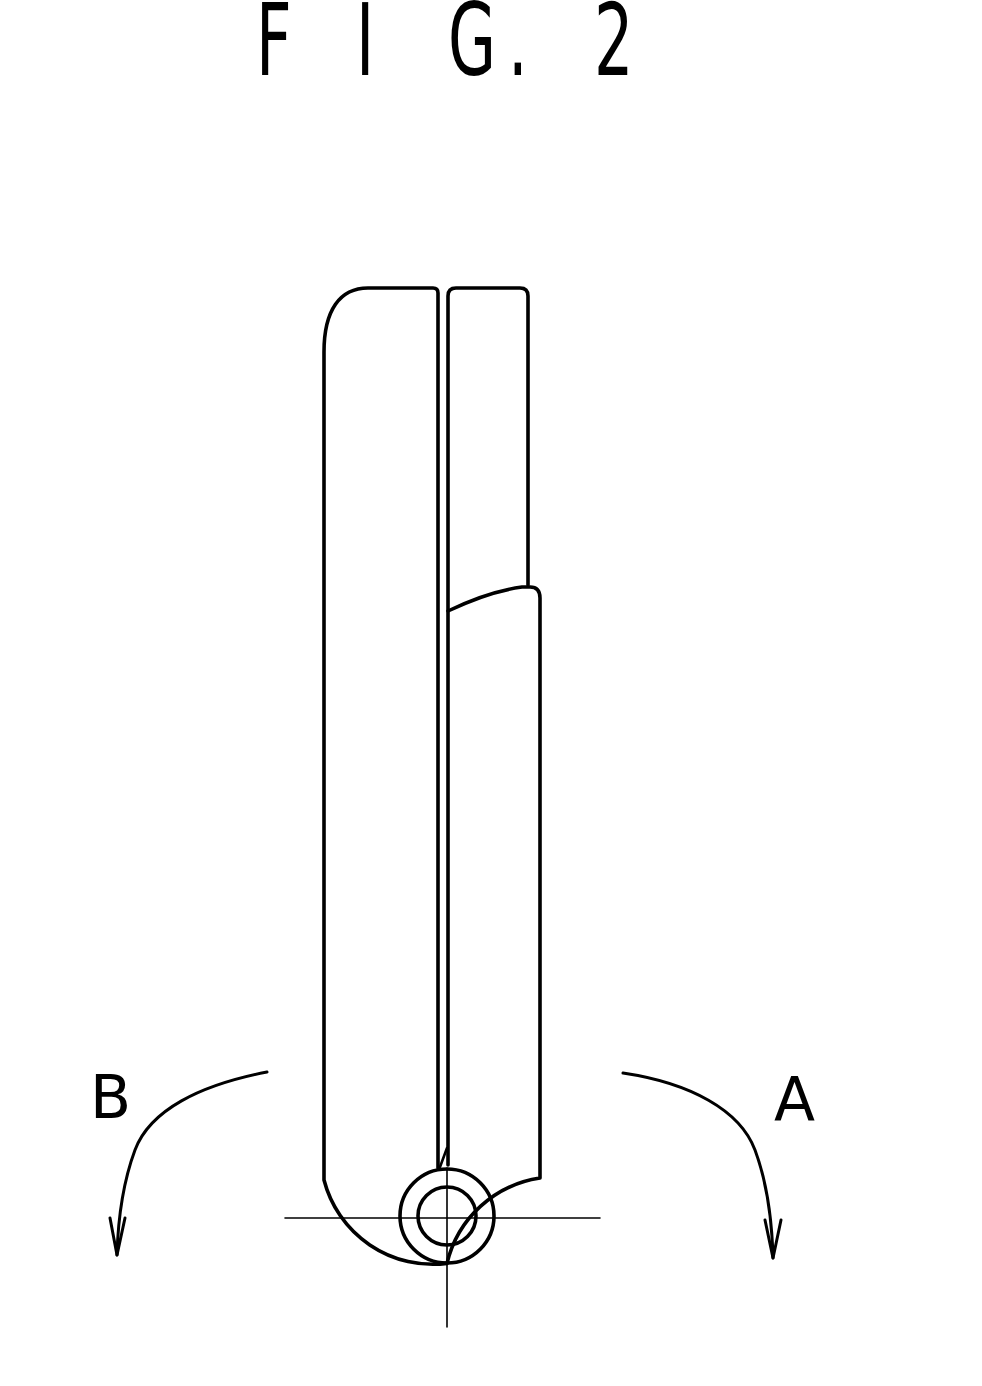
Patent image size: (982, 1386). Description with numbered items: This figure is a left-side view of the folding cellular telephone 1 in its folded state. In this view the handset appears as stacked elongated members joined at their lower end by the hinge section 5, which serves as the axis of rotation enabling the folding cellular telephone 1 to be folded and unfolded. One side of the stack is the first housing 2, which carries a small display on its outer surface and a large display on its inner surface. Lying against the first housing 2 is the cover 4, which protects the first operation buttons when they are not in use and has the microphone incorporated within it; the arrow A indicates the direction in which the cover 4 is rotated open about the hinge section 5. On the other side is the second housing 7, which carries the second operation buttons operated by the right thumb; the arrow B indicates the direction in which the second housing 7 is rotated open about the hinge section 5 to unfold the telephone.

The folding cellular telephone 1 is at (483, 821).
The first housing 2 is at (498, 423).
The cover 4 is at (513, 743).
The hinge section 5 is at (433, 1227).
The second housing 7 is at (355, 442).